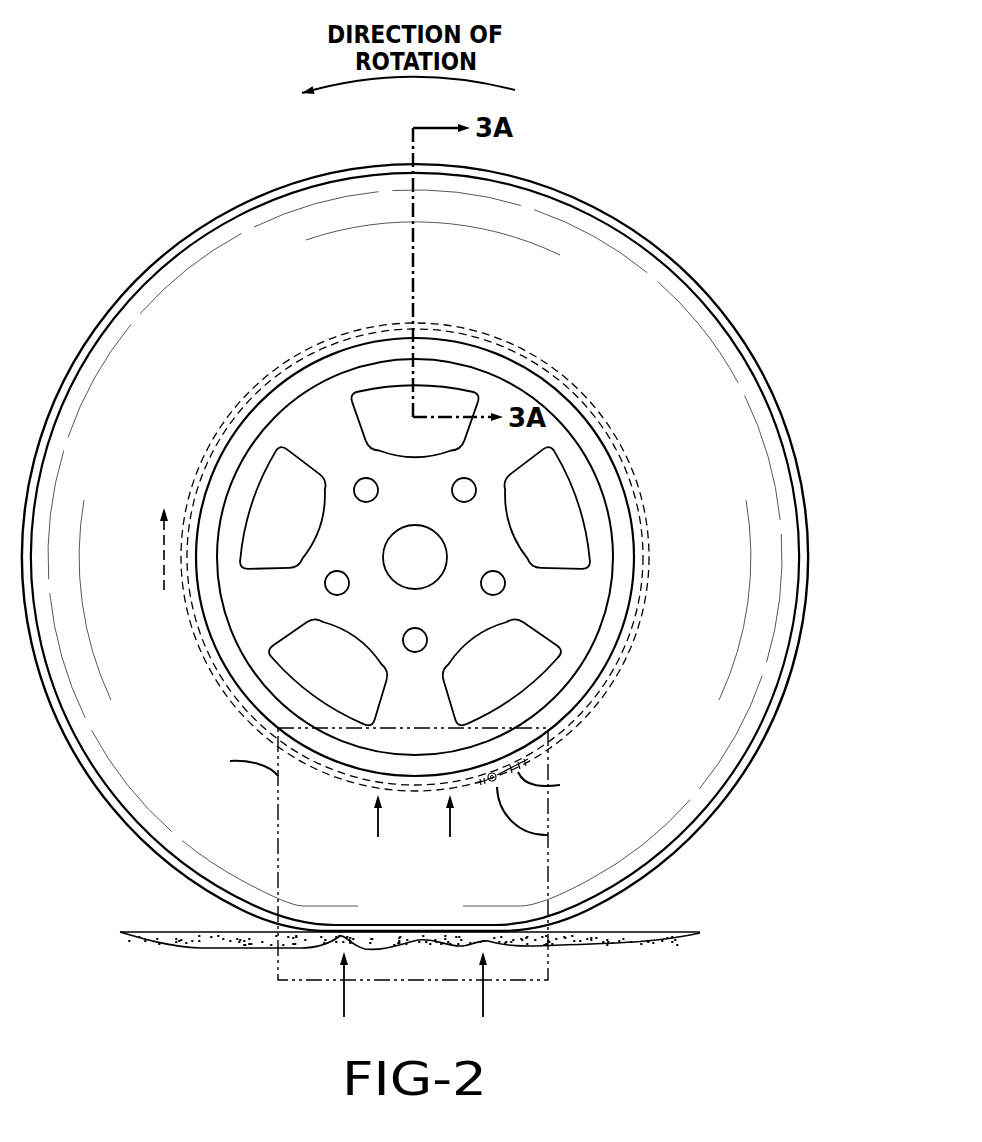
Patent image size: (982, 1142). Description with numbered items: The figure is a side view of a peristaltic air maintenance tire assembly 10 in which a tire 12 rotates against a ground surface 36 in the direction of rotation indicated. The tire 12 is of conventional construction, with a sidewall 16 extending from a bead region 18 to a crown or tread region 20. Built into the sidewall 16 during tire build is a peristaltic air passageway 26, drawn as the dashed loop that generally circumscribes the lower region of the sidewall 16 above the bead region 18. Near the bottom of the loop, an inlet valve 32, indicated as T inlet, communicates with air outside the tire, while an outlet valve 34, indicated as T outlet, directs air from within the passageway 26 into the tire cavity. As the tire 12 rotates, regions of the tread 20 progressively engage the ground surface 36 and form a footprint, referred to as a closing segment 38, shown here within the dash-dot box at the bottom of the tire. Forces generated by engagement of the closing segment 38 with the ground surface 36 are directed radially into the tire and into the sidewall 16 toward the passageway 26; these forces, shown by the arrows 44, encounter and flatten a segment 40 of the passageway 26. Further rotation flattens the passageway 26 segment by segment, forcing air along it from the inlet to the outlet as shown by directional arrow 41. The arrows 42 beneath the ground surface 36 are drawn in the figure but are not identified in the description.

The peristaltic air maintenance tire assembly 10 is at (125, 98).
The tire 12 is at (582, 222).
The tire sidewall 16 is at (695, 368).
The bead region 18 is at (633, 476).
The tread region 20 is at (202, 227).
The air passageway 26 is at (212, 436).
The inlet valve 32 is at (497, 773).
The outlet valve 34 is at (510, 768).
The ground surface 36 is at (645, 932).
The closing segment 38 is at (316, 845).
The flattened segment of the passageway 40 is at (422, 790).
The directional arrow 41 is at (164, 552).
The load force arrows 42 is at (503, 1027).
The forces 44 is at (468, 865).